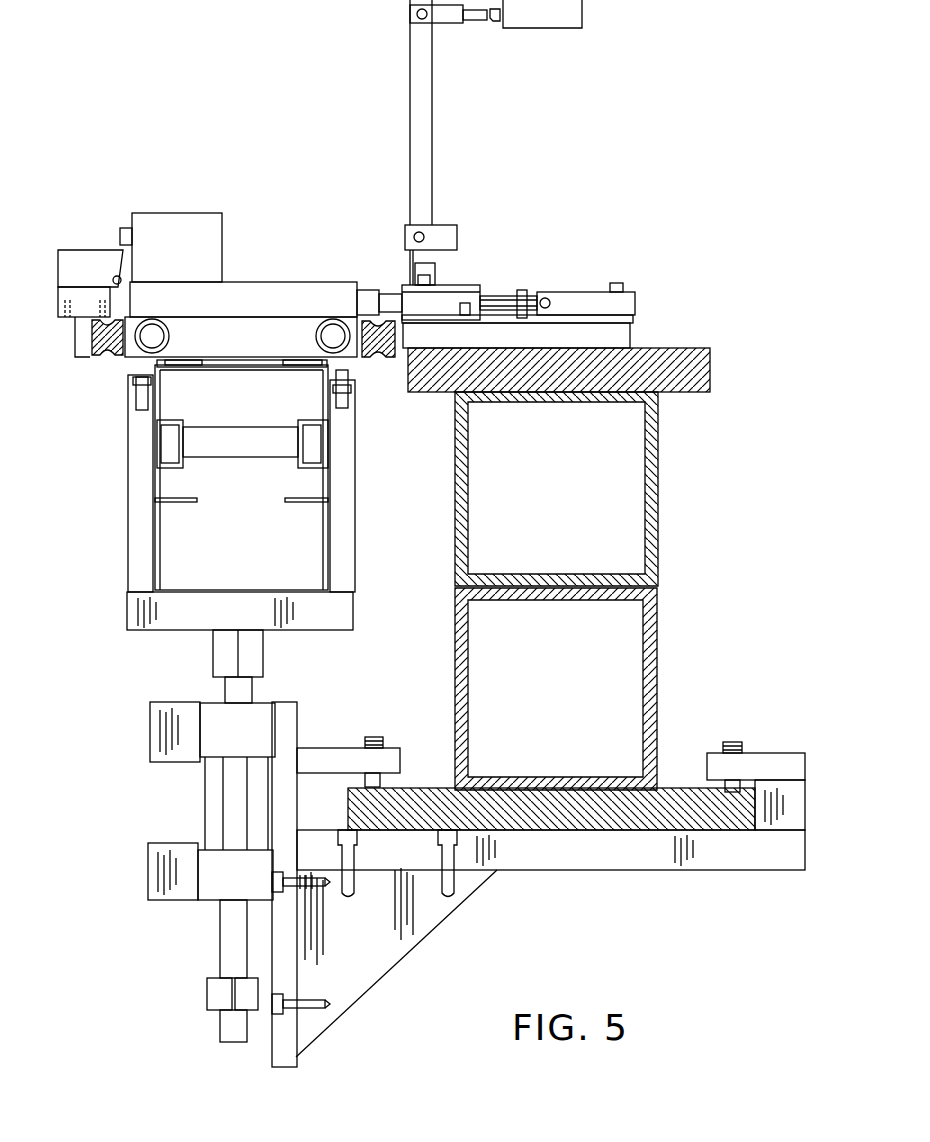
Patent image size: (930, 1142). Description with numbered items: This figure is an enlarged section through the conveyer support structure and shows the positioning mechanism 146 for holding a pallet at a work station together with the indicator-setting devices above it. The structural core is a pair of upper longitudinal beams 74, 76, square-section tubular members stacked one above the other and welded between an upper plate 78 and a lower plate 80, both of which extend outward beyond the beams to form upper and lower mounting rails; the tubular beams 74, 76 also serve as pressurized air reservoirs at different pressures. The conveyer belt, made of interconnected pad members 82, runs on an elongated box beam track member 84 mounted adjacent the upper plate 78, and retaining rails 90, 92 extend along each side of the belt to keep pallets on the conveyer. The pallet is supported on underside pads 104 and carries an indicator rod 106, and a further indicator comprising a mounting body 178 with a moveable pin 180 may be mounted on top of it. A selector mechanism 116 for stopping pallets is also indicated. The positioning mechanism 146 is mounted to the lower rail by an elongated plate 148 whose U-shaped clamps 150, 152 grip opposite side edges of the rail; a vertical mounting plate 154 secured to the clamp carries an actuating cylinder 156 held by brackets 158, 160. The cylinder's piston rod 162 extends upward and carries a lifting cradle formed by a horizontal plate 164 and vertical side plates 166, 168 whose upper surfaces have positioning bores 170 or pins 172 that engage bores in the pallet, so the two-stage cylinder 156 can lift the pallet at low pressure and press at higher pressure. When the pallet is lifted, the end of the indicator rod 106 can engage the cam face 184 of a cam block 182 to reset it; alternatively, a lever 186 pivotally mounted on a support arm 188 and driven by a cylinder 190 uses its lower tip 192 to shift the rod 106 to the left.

The upper longitudinal beam 74 is at (663, 518).
The upper longitudinal beam 76 is at (657, 678).
The upper plate 78 is at (687, 353).
The lower plate 80 is at (590, 835).
The pad member 82 is at (232, 366).
The box beam track member 84 is at (140, 408).
The retaining rail 90 is at (90, 338).
The retaining rail 92 is at (392, 300).
The pad 104 is at (143, 383).
The indicator rod 106 is at (368, 297).
The selector mechanism 116 is at (510, 254).
The positioning mechanism 146 is at (102, 666).
The elongated plate 148 is at (672, 871).
The U-shaped clamp 150 is at (798, 762).
The U-shaped clamp 152 is at (335, 750).
The vertical mounting plate 154 is at (297, 927).
The actuating cylinder 156 is at (210, 803).
The bracket 158 is at (153, 735).
The bracket 160 is at (155, 871).
The piston rod 162 is at (227, 948).
The horizontal plate 164 is at (212, 596).
The vertical side plate 166 is at (137, 545).
The vertical side plate 168 is at (345, 534).
The positioning bore 170 is at (182, 363).
The pin 172 is at (347, 368).
The mounting body 178 is at (164, 233).
The moveable pin 180 is at (124, 240).
The cam block 182 is at (80, 250).
The cam face 184 is at (113, 278).
The lever 186 is at (412, 100).
The support arm 188 is at (445, 233).
The cylinder 190 is at (535, 25).
The tip 192 is at (400, 288).